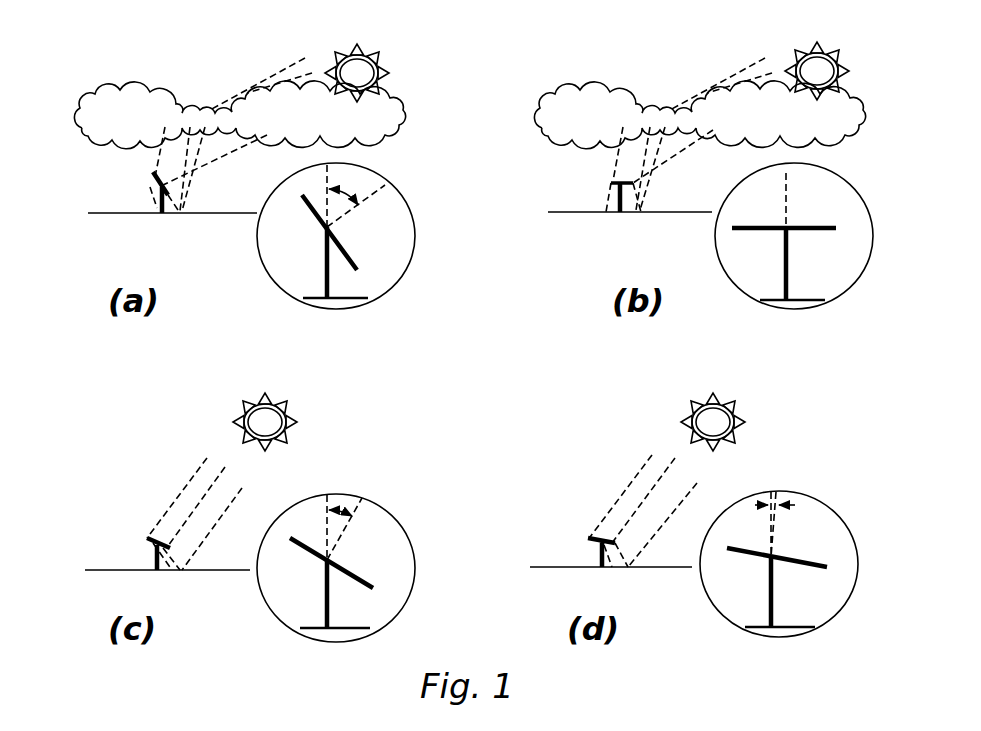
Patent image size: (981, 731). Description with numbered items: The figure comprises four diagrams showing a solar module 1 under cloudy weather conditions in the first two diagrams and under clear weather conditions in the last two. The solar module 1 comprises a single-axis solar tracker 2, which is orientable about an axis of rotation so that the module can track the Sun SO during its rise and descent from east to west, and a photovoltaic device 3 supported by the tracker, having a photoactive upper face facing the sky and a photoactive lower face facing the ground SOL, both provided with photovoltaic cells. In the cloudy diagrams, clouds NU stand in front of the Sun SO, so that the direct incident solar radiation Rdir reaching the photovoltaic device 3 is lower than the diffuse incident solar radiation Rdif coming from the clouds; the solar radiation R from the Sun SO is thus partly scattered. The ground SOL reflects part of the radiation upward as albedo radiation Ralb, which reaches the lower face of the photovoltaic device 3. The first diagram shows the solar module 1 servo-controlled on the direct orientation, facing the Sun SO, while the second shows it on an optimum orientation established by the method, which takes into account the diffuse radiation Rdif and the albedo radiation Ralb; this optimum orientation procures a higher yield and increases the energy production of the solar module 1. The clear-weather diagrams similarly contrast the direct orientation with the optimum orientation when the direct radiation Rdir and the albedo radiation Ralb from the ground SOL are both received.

The solar module 1 is at (302, 255).
The single-axis solar tracker 2 is at (331, 285).
The photovoltaic device 3 is at (364, 264).
The Sun SO is at (360, 68).
The clouds NU is at (122, 108).
The solar radiation R is at (283, 70).
The diffuse incident solar radiation Rdif is at (158, 152).
The direct incident solar radiation Rdir is at (215, 156).
The albedo radiation Ralb is at (152, 200).
The ground SOL is at (100, 213).